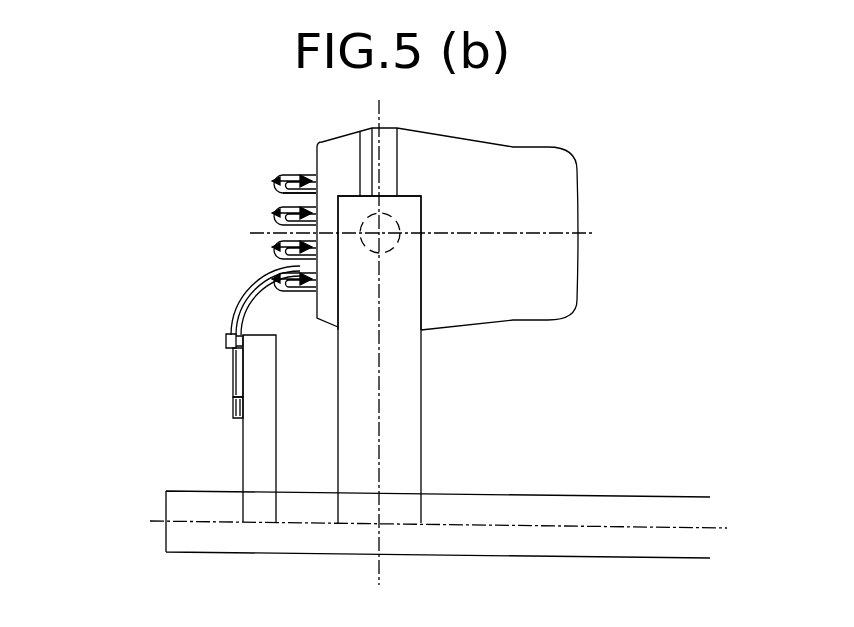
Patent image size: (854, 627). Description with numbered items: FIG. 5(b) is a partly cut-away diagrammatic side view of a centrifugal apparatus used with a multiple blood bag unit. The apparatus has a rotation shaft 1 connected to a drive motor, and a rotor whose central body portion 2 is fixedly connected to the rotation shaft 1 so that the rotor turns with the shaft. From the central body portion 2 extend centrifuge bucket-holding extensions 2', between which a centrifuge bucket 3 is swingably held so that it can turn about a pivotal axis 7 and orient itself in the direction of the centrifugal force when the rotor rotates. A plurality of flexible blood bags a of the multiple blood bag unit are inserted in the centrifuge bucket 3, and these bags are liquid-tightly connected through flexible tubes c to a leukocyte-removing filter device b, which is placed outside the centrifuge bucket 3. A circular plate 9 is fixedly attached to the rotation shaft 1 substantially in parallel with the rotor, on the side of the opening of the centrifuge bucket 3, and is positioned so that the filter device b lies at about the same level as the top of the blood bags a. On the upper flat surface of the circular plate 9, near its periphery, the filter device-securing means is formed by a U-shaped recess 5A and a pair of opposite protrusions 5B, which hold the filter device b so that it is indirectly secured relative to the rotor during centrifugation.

The rotation shaft 1 is at (658, 512).
The central body portion 2 is at (427, 359).
The centrifuge bucket-holding extension 2' is at (432, 286).
The centrifuge bucket 3 is at (432, 143).
The pivotal axis 7 is at (383, 231).
The circular plate 9 is at (252, 452).
The U-shaped recess 5A is at (225, 342).
The protrusion 5B is at (234, 377).
The blood bag a is at (283, 175).
The leukocyte-removing filter device b is at (235, 410).
The flexible tube c is at (290, 200).